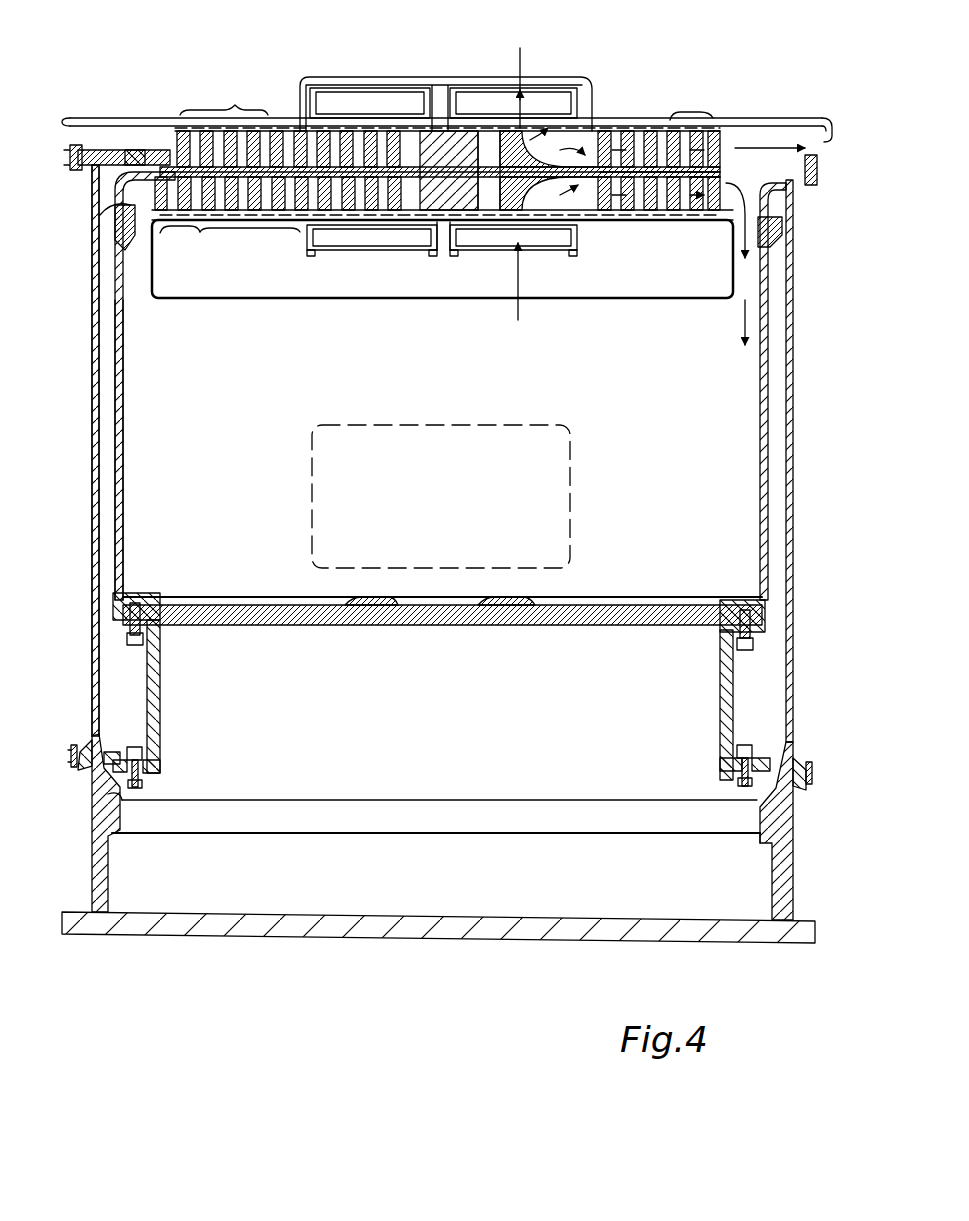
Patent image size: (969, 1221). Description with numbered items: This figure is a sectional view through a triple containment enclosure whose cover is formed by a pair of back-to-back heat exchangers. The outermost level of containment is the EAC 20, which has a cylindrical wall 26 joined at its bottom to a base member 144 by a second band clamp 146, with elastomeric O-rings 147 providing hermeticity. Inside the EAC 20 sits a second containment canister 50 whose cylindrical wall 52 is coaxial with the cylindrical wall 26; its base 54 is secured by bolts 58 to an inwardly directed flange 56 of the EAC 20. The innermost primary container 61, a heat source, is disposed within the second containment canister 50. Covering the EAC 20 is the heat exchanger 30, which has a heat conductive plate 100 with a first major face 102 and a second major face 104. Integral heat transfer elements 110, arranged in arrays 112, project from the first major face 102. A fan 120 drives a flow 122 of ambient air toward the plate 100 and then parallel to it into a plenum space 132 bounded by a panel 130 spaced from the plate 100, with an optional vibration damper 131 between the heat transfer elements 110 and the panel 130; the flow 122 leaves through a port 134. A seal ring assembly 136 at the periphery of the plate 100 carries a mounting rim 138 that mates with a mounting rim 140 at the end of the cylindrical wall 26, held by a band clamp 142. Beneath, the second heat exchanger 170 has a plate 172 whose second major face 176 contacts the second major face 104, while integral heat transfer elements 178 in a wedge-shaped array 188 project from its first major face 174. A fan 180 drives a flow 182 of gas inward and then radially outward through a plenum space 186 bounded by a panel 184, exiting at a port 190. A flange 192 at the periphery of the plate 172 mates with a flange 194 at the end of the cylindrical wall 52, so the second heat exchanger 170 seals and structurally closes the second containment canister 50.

The heat exchanger 30 is at (198, 58).
The EAC 20 is at (92, 307).
The cylindrical wall 26 is at (96, 355).
The second containment canister 50 is at (113, 392).
The cylindrical wall 52 is at (120, 443).
The base 54 is at (300, 623).
The inwardly directed flange 56 is at (157, 788).
The bolts 58 is at (148, 645).
The primary container 61 is at (452, 426).
The plate 100 is at (350, 153).
The first major face 102 is at (337, 165).
The second major face 104 is at (370, 170).
The integral heat transfer elements 110 is at (262, 138).
The arrays 112 is at (448, 125).
The fan 120 is at (490, 107).
The flow direction 122 is at (527, 55).
The panel 130 is at (135, 119).
The vibration damper 131 is at (175, 128).
The plenum space 132 is at (85, 128).
The port 134 is at (826, 142).
The seal ring assembly 136 is at (150, 141).
The mounting rim 138 is at (90, 142).
The mounting rim 140 is at (103, 187).
The band clamp 142 is at (87, 170).
The base member 144 is at (97, 812).
The second band clamp 146 is at (70, 742).
The elastomeric O-rings 147 is at (110, 752).
The second heat exchanger 170 is at (302, 266).
The plate 172 is at (343, 178).
The first major face 174 is at (357, 188).
The second major face 176 is at (383, 175).
The integral heat transfer elements 178 is at (236, 214).
The fan 180 is at (563, 257).
The flow 182 is at (527, 277).
The panel 184 is at (648, 222).
The plenum space 186 is at (692, 213).
The wedge-shaped array 188 is at (181, 245).
The port 190 is at (743, 326).
The flange 192 is at (123, 199).
The flange 194 is at (127, 247).